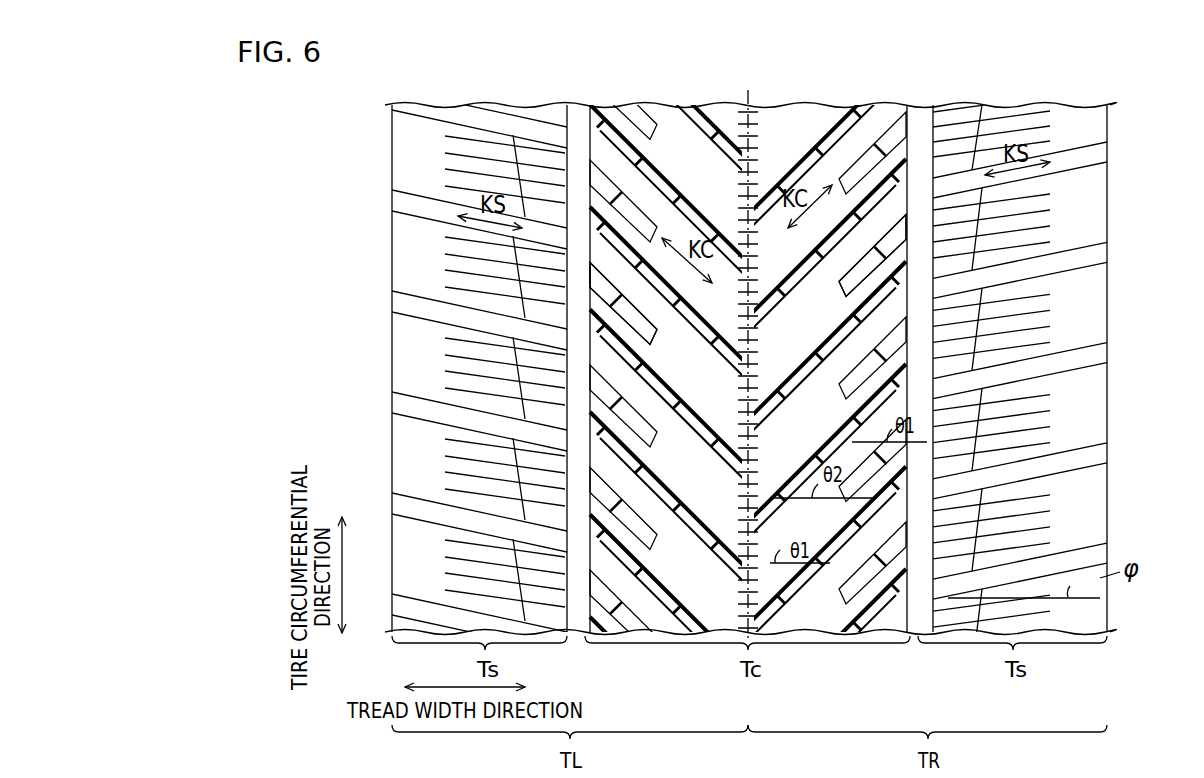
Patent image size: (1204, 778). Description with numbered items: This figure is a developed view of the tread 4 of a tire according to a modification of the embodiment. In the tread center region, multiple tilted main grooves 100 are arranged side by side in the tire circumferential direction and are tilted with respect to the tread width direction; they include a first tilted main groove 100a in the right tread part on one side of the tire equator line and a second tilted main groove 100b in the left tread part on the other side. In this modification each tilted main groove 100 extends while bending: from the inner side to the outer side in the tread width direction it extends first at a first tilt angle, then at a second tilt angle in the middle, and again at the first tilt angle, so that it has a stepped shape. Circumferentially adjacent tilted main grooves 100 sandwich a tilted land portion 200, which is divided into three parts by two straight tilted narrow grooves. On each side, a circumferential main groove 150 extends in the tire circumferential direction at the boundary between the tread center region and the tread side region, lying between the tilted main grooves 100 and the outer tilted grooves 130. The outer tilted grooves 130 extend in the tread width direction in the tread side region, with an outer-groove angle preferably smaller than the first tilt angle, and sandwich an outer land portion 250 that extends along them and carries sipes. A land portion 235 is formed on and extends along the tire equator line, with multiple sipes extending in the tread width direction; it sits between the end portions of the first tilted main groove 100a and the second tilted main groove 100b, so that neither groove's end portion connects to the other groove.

The tread 4 is at (1032, 50).
The tilted main groove 100 is at (748, 389).
The first tilted main groove 100a is at (816, 388).
The second tilted main groove 100b is at (590, 104).
The circumferential main groove 150 is at (574, 99).
The outer tilted groove 130 is at (389, 203).
The outer land portion 250 is at (402, 257).
The tilted land portion 200 is at (590, 262).
The land portion 235 is at (727, 104).